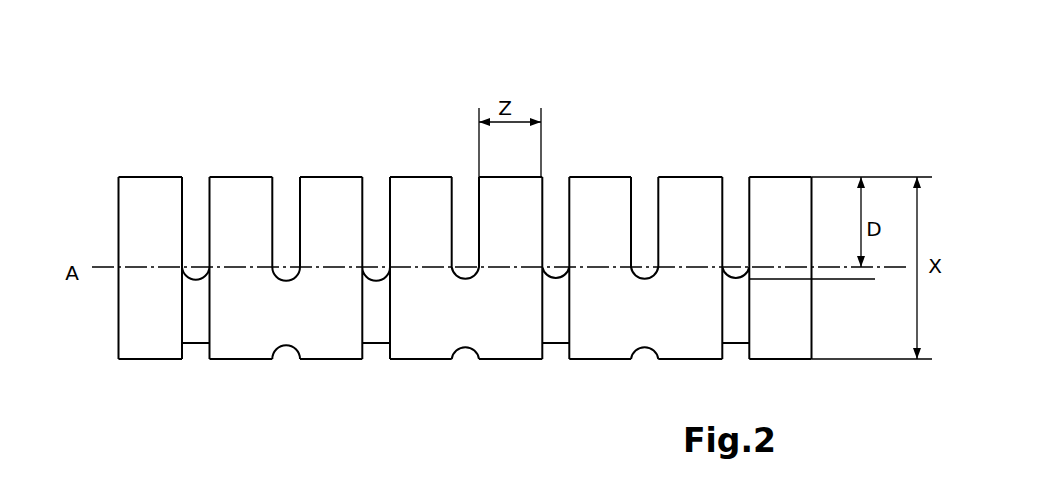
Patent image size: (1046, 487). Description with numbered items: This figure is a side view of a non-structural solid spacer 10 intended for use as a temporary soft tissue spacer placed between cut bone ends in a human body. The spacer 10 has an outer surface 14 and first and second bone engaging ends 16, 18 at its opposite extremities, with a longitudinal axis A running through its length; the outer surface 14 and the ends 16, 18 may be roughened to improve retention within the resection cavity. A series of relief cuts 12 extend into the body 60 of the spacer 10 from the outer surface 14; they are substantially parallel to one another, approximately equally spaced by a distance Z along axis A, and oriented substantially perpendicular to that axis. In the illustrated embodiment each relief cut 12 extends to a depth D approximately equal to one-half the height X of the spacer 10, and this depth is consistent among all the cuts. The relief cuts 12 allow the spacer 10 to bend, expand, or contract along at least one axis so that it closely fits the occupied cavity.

The spacer 10 is at (815, 89).
The relief cuts 12 is at (644, 187).
The outer surface 14 is at (600, 177).
The first bone engaging end 16 is at (118, 308).
The second bone engaging end 18 is at (813, 310).
The body 60 is at (504, 305).